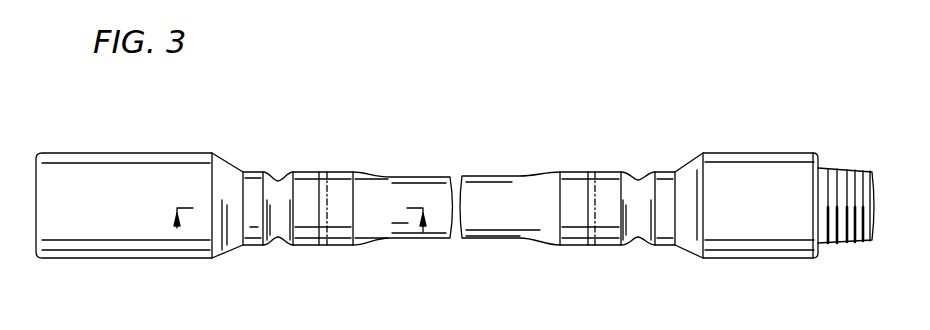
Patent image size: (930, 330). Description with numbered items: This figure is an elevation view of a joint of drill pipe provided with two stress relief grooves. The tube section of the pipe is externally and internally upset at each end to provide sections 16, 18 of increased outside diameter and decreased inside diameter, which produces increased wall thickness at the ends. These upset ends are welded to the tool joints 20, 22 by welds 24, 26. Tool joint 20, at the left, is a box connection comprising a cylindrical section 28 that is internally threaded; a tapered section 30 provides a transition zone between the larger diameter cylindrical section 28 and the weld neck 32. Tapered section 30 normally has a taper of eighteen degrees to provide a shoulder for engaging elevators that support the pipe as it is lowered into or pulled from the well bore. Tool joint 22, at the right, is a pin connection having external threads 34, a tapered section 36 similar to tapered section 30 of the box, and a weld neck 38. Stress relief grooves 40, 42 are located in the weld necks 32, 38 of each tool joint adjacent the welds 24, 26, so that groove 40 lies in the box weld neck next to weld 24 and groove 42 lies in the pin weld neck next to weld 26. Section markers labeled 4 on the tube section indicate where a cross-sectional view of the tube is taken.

The section line 4- 4 is at (298, 222).
The upset section 16 is at (577, 172).
The upset section 18 is at (350, 172).
The tool joint 20 is at (127, 153).
The tool joint 22 is at (763, 153).
The weld 24 is at (322, 172).
The weld 26 is at (594, 172).
The cylindrical section 28 is at (113, 258).
The tapered section 30 is at (222, 157).
The weld neck 32 is at (308, 247).
The external threads 34 is at (852, 243).
The tapered section 36 is at (694, 250).
The weld neck 38 is at (609, 245).
The stress relief groove 40 is at (277, 238).
The stress relief groove 42 is at (640, 238).